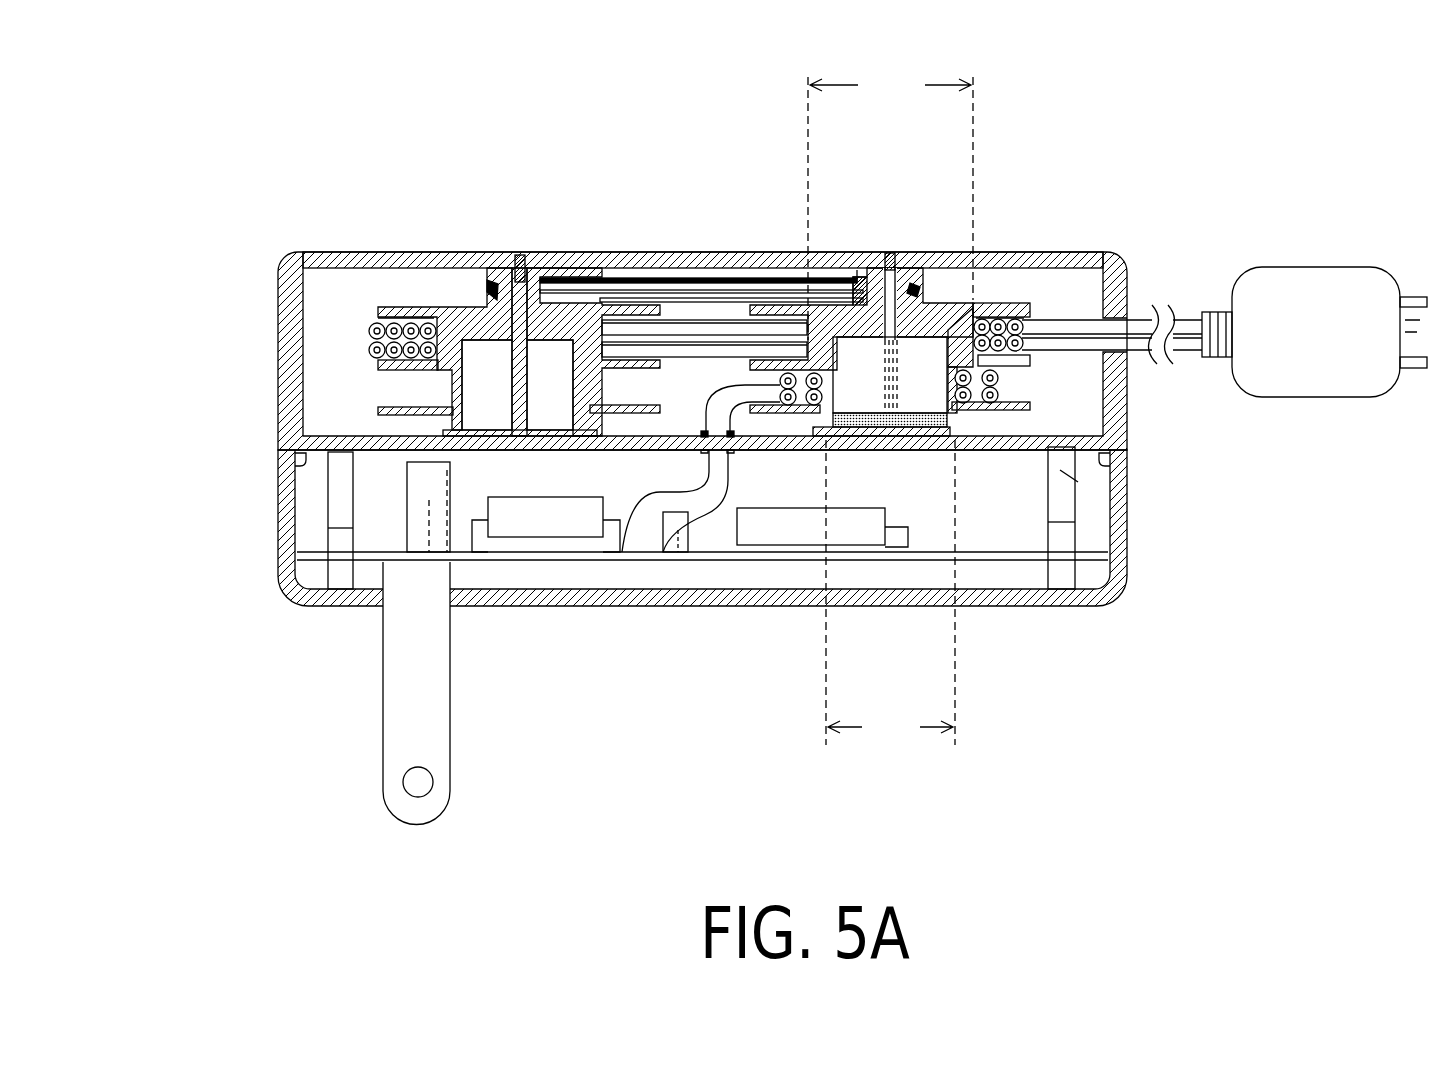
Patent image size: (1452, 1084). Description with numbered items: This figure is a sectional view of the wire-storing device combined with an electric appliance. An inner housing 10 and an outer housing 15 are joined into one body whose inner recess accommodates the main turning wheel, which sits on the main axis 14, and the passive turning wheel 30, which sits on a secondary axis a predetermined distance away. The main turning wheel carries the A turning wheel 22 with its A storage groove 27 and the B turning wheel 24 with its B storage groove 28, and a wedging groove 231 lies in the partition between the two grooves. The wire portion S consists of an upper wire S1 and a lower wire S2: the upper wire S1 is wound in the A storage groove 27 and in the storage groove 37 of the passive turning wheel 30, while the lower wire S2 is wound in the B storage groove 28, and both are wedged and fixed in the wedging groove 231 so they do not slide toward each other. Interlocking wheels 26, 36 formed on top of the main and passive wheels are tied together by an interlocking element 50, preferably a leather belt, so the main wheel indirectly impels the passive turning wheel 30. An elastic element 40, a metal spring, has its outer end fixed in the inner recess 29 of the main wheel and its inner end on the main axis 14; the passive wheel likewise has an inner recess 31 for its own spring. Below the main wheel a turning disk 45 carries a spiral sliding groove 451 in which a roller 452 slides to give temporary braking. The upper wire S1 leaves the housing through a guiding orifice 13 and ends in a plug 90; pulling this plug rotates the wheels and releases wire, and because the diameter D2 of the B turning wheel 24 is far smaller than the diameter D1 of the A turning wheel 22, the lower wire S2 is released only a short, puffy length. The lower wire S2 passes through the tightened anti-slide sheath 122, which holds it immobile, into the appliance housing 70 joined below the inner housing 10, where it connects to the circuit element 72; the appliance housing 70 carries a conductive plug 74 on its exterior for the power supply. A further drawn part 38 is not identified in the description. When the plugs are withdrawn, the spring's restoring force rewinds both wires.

The inner housing 10 is at (636, 283).
The outer housing 15 is at (450, 252).
The B turning wheel 24 is at (1047, 473).
The conductive plug 74 is at (411, 679).
The appliance housing 70 is at (1037, 437).
The inner recess 31 is at (447, 466).
The circuit element 72 is at (705, 452).
The anti-slide sheath 122 is at (710, 452).
The storage groove 37 is at (372, 362).
The lower core arm 38 is at (402, 391).
The interlocking wheel 36 is at (546, 318).
The passive turning wheel 30 is at (577, 300).
The interlocking element 50 is at (666, 290).
The main axis 14 is at (925, 305).
The interlocking wheel 26 is at (866, 268).
The A storage groove 27 is at (770, 306).
The turning disk 45 is at (837, 428).
The roller 452 is at (823, 428).
The spiral sliding groove 451 is at (870, 428).
The A turning wheel 22 is at (965, 292).
The elastic element 40 is at (1005, 425).
The inner recess 29 is at (992, 318).
The wedging groove 231 is at (1007, 382).
The B storage groove 28 is at (990, 368).
The guiding orifice 13 is at (1126, 306).
The wire portion S is at (1199, 302).
The plug 90 is at (1383, 330).
The upper wire S1 is at (383, 316).
The lower wire S2 is at (683, 508).
The diameter of the A turning wheel D1 is at (890, 201).
The diameter of the B turning wheel D2 is at (890, 595).